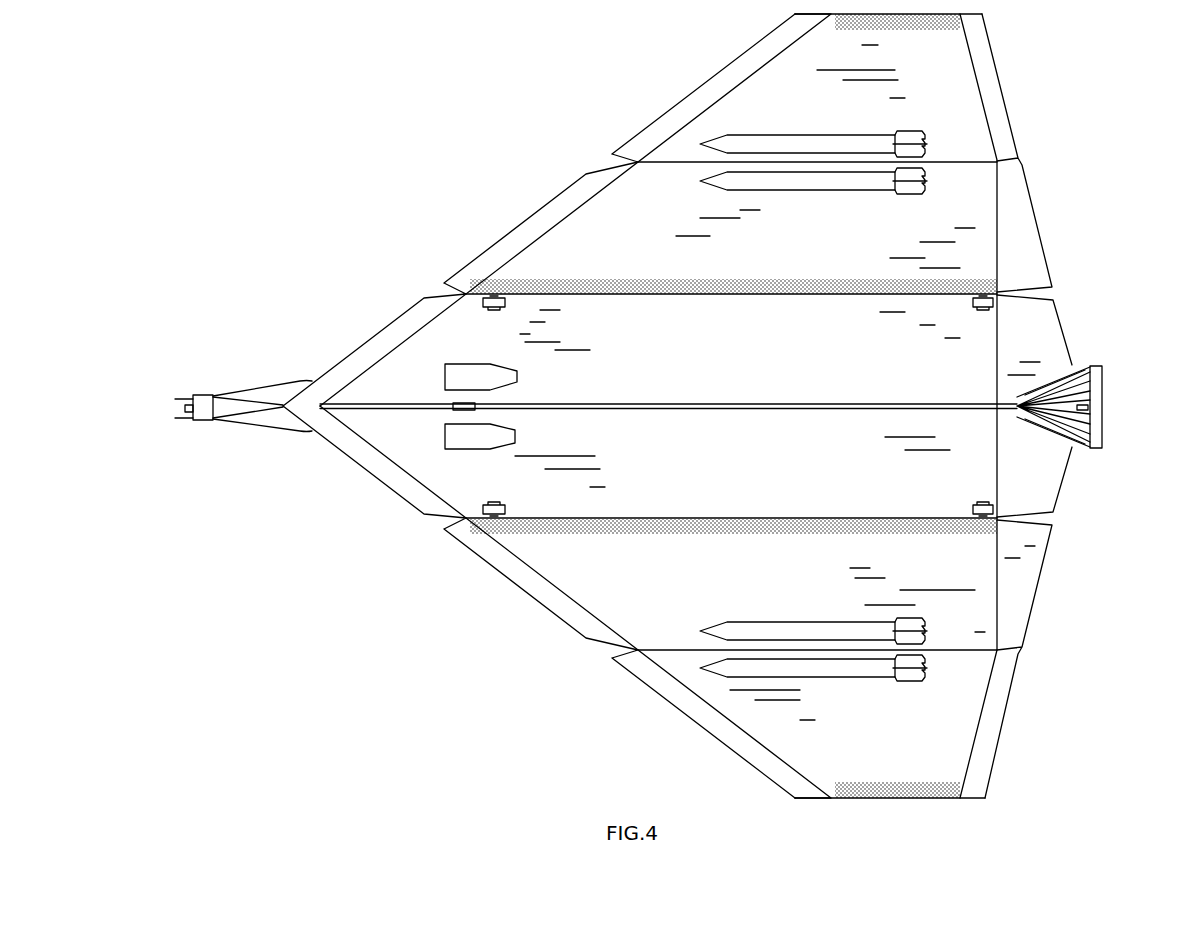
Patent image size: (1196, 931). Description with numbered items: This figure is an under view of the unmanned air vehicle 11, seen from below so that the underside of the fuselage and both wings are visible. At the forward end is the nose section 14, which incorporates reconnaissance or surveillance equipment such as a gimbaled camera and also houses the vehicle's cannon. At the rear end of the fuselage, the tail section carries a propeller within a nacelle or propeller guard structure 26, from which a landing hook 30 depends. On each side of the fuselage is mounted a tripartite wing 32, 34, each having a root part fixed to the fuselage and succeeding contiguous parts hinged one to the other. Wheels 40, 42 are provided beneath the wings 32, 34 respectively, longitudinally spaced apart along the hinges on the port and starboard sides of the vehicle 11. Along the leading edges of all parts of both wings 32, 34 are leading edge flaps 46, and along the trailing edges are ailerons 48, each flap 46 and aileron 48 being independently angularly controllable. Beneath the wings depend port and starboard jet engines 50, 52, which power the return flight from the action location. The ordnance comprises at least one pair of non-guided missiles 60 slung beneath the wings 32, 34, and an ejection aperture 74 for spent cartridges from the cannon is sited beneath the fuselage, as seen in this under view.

The unmanned air vehicle 11 is at (235, 135).
The nose section 14 is at (245, 393).
The propeller guard structure 26 is at (1097, 376).
The landing hook 30 is at (1090, 418).
The wing 32 is at (507, 207).
The wing 34 is at (523, 610).
The wheel 40 is at (484, 304).
The wheel 42 is at (503, 508).
The leading edge flap 46 is at (612, 155).
The aileron 48 is at (1003, 121).
The jet engine 50 is at (498, 375).
The jet engine 52 is at (507, 433).
The missile 60 is at (800, 180).
The ejection aperture 74 is at (455, 403).